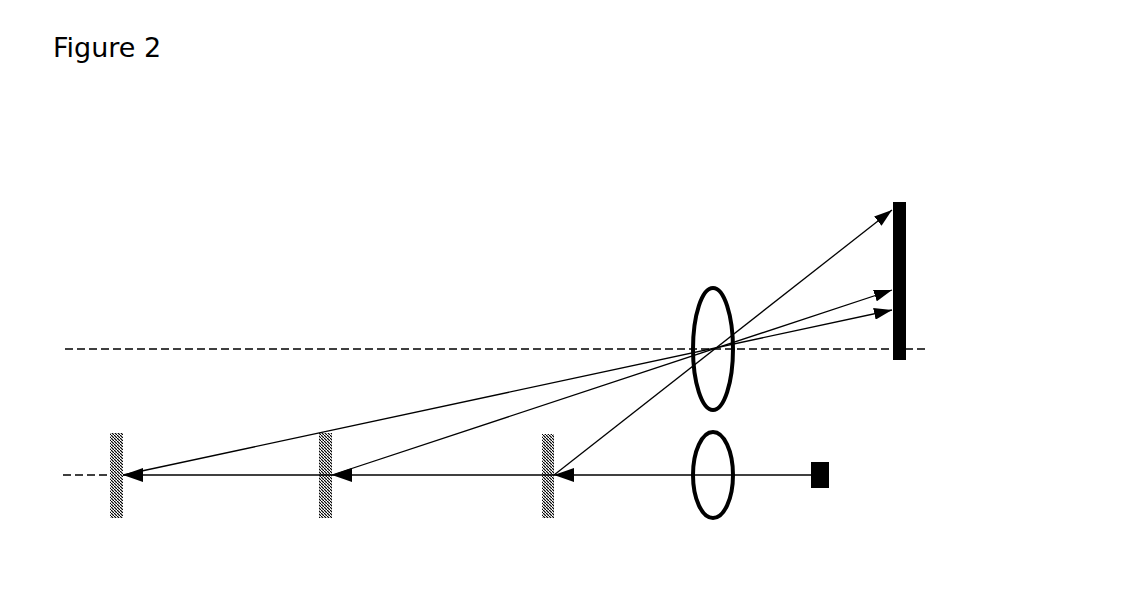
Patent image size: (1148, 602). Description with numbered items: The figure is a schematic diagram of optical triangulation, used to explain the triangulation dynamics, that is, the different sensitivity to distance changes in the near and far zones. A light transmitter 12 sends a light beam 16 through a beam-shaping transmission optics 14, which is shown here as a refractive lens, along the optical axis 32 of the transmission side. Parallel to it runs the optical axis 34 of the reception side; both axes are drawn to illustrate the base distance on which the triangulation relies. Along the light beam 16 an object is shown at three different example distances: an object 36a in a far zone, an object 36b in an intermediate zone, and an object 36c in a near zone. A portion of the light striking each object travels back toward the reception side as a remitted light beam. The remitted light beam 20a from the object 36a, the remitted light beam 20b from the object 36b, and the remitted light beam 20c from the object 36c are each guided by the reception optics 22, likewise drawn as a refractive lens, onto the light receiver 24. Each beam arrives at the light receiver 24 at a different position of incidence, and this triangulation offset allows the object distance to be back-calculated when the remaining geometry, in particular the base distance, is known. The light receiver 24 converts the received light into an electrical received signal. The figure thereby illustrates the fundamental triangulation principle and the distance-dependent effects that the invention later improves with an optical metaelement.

The light transmitter 12 is at (829, 480).
The transmission optics 14 is at (717, 483).
The light beam 16 is at (622, 475).
The remitted light beam 20a is at (828, 326).
The remitted light beam 20b is at (858, 302).
The remitted light beam 20c is at (862, 231).
The reception optics 22 is at (710, 322).
The light receiver 24 is at (906, 252).
The optical axis at the transmission side 32 is at (83, 473).
The optical axis at the reception side 34 is at (182, 350).
The object in the far zone 36a is at (112, 500).
The object in the intermediate zone 36b is at (328, 492).
The object in the near zone 36c is at (542, 503).